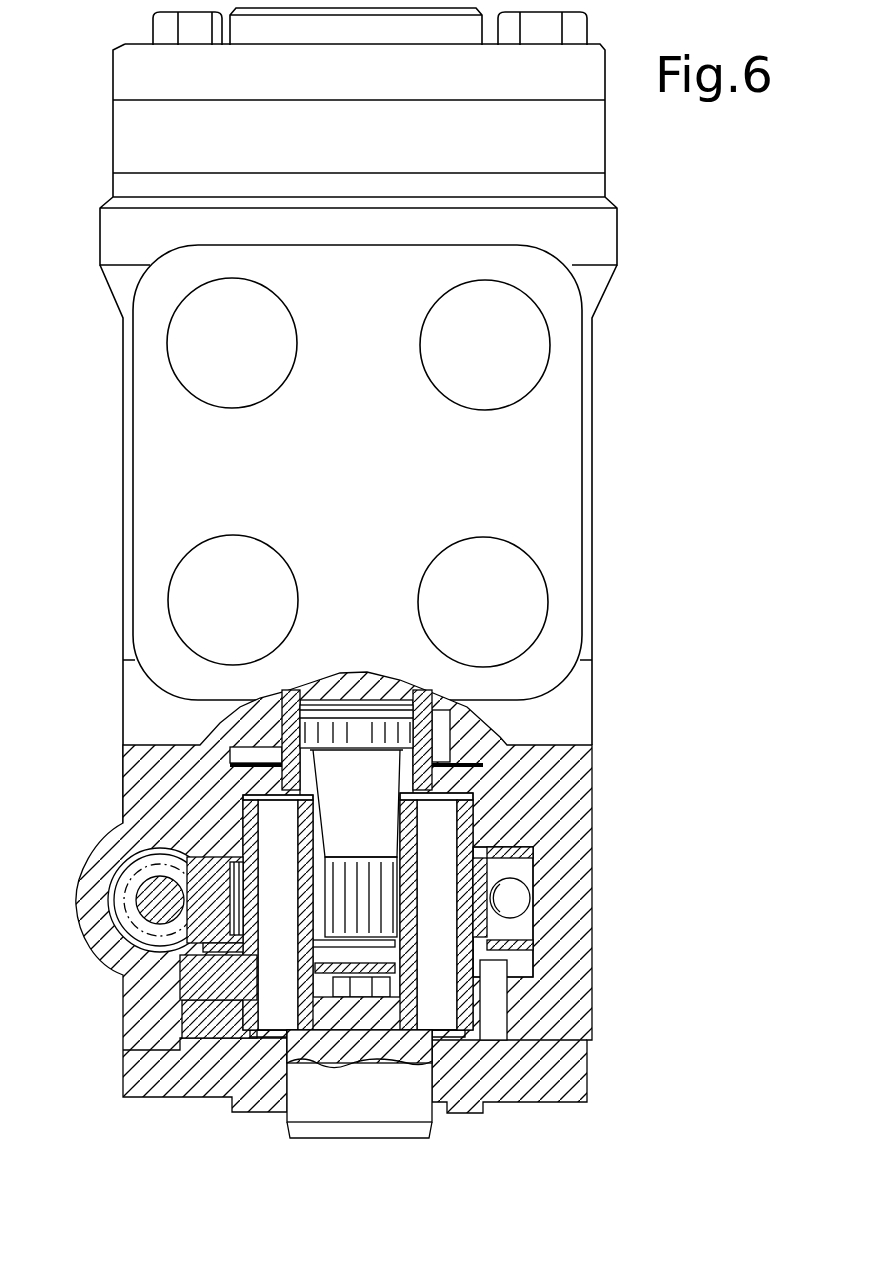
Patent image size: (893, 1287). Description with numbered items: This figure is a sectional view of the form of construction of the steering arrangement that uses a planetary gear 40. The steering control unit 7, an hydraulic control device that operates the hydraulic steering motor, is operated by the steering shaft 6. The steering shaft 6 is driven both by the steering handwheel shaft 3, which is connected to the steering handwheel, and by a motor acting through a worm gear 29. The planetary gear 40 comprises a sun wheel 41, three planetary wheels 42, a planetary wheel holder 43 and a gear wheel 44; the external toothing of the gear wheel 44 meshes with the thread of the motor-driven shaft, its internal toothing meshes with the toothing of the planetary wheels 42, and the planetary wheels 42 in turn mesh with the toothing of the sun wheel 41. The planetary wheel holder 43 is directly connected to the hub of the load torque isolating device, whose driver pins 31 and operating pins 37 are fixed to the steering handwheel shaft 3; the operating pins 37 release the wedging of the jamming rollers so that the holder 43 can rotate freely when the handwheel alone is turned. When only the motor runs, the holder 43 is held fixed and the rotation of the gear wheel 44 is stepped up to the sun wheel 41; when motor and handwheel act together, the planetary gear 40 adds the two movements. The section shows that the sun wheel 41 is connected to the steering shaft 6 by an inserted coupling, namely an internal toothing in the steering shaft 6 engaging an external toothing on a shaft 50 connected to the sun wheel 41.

The steering handwheel shaft 3 is at (311, 1130).
The steering shaft 6 is at (290, 732).
The steering control unit 7 is at (560, 443).
The worm gear 29 is at (110, 907).
The driver pins 31 is at (293, 1000).
The operating pins 37 is at (495, 1022).
The planetary gear 40 is at (183, 992).
The sun wheel 41 is at (330, 878).
The planetary wheels 42 is at (243, 858).
The planetary wheel holder 43 is at (223, 992).
The gear wheel 44 is at (217, 872).
The shaft 50 is at (374, 807).